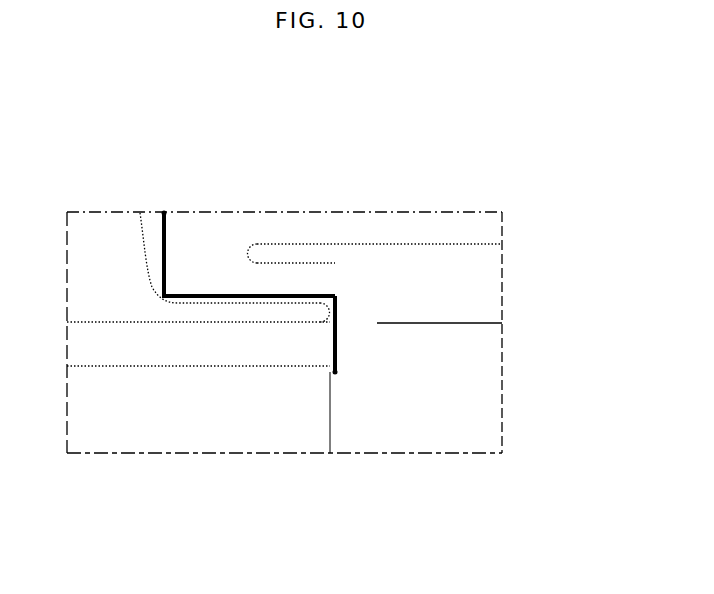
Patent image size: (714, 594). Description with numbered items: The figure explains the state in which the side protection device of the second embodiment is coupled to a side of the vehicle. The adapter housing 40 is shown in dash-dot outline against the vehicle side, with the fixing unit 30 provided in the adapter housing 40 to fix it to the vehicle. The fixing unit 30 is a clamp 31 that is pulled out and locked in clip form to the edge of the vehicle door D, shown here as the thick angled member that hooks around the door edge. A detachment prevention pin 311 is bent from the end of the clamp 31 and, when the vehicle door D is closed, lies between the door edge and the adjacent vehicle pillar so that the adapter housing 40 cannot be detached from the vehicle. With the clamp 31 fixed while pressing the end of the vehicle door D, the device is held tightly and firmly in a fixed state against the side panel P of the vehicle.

The fixing unit 30 is at (270, 215).
The detachment prevention pin 311 is at (166, 214).
The clamp 31 is at (377, 323).
The adapter housing 40 is at (187, 426).
The vehicle door D is at (98, 227).
The side panel P is at (484, 271).